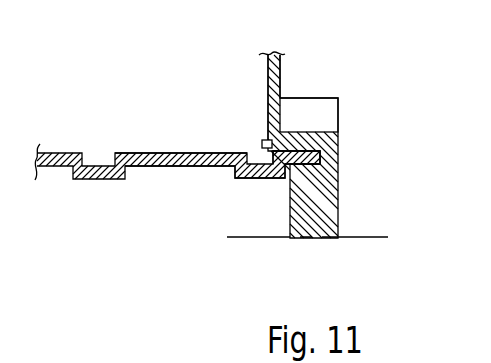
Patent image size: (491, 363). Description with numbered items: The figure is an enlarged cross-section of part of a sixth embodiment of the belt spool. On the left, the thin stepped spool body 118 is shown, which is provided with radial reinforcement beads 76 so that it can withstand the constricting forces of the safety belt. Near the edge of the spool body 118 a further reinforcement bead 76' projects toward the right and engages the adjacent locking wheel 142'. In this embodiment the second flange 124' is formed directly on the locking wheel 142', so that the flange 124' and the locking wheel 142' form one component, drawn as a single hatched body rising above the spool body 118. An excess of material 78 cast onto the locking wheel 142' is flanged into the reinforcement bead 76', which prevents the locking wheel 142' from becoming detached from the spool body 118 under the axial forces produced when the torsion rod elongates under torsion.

The radial reinforcement bead 76 is at (177, 216).
The reinforcement bead 76' is at (258, 218).
The spool body 118 is at (172, 168).
The second flange 124' is at (320, 82).
The locking wheel 142' is at (343, 146).
The excess of material 78 is at (248, 131).